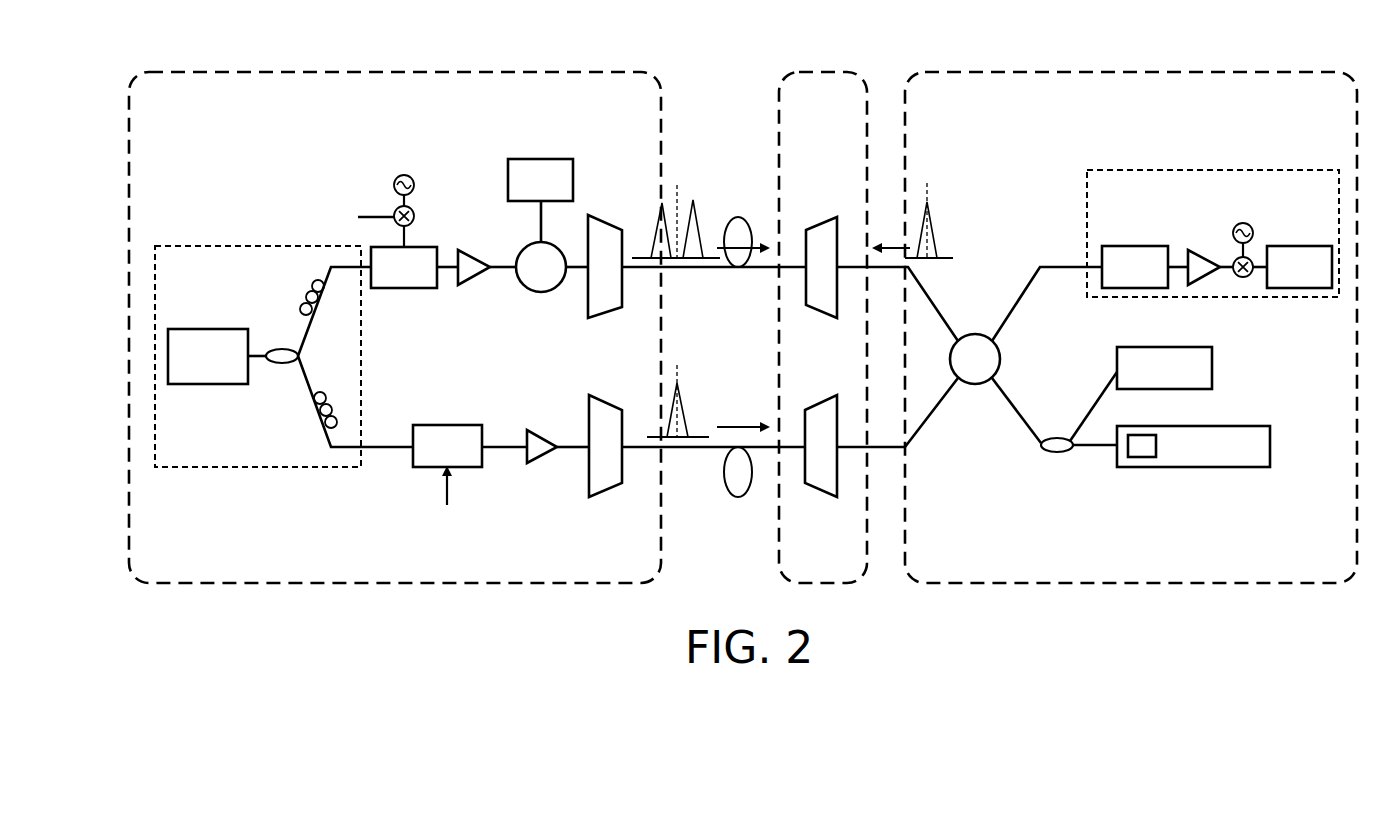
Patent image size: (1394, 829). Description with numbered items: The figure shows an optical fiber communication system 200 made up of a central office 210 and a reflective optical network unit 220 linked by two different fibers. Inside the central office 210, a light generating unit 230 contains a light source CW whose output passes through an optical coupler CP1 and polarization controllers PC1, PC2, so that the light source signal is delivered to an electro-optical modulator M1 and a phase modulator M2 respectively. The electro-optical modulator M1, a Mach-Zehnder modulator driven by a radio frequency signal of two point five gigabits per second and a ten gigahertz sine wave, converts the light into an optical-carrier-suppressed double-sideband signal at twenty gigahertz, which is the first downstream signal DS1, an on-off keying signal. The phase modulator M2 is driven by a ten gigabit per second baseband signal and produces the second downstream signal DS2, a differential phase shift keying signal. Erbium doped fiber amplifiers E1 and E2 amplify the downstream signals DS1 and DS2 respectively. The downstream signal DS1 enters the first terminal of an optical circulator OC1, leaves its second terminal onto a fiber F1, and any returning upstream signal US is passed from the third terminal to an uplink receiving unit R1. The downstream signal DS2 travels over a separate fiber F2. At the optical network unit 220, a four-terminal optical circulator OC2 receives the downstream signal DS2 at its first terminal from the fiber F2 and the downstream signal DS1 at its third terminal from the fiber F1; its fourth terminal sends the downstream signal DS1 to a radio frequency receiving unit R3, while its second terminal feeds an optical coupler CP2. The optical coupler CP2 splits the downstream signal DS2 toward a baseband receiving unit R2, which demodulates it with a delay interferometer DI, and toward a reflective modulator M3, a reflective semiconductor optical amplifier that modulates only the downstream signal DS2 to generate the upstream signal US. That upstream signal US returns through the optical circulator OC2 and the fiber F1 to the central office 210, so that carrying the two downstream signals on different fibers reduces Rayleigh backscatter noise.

The optical fiber communication system 200 is at (1346, 26).
The central office 210 is at (396, 70).
The optical network unit 220 is at (1151, 70).
The light generating unit 230 is at (193, 245).
The light source CW is at (208, 356).
The optical coupler CP1 is at (282, 365).
The polarization controller PC1 is at (304, 296).
The polarization controller PC2 is at (345, 377).
The electro-optical modulator M1 is at (404, 289).
The phase modulator M2 is at (447, 425).
The Erbium doped fiber amplifier E1 is at (475, 250).
The Erbium doped fiber amplifier E2 is at (545, 460).
The optical circulator OC1 is at (543, 295).
The uplink receiving unit R1 is at (541, 158).
The fiber F1 is at (705, 270).
The fiber F2 is at (700, 450).
The first downstream signal DS1 is at (697, 212).
The second downstream signal DS2 is at (683, 402).
The upstream signal US is at (935, 228).
The optical circulator OC2 is at (1003, 359).
The optical coupler CP2 is at (1057, 455).
The reflective modulator M3 is at (1213, 365).
The baseband receiving unit R2 is at (1271, 445).
The delay interferometer DI is at (1140, 458).
The radio frequency receiving unit R3 is at (1168, 168).